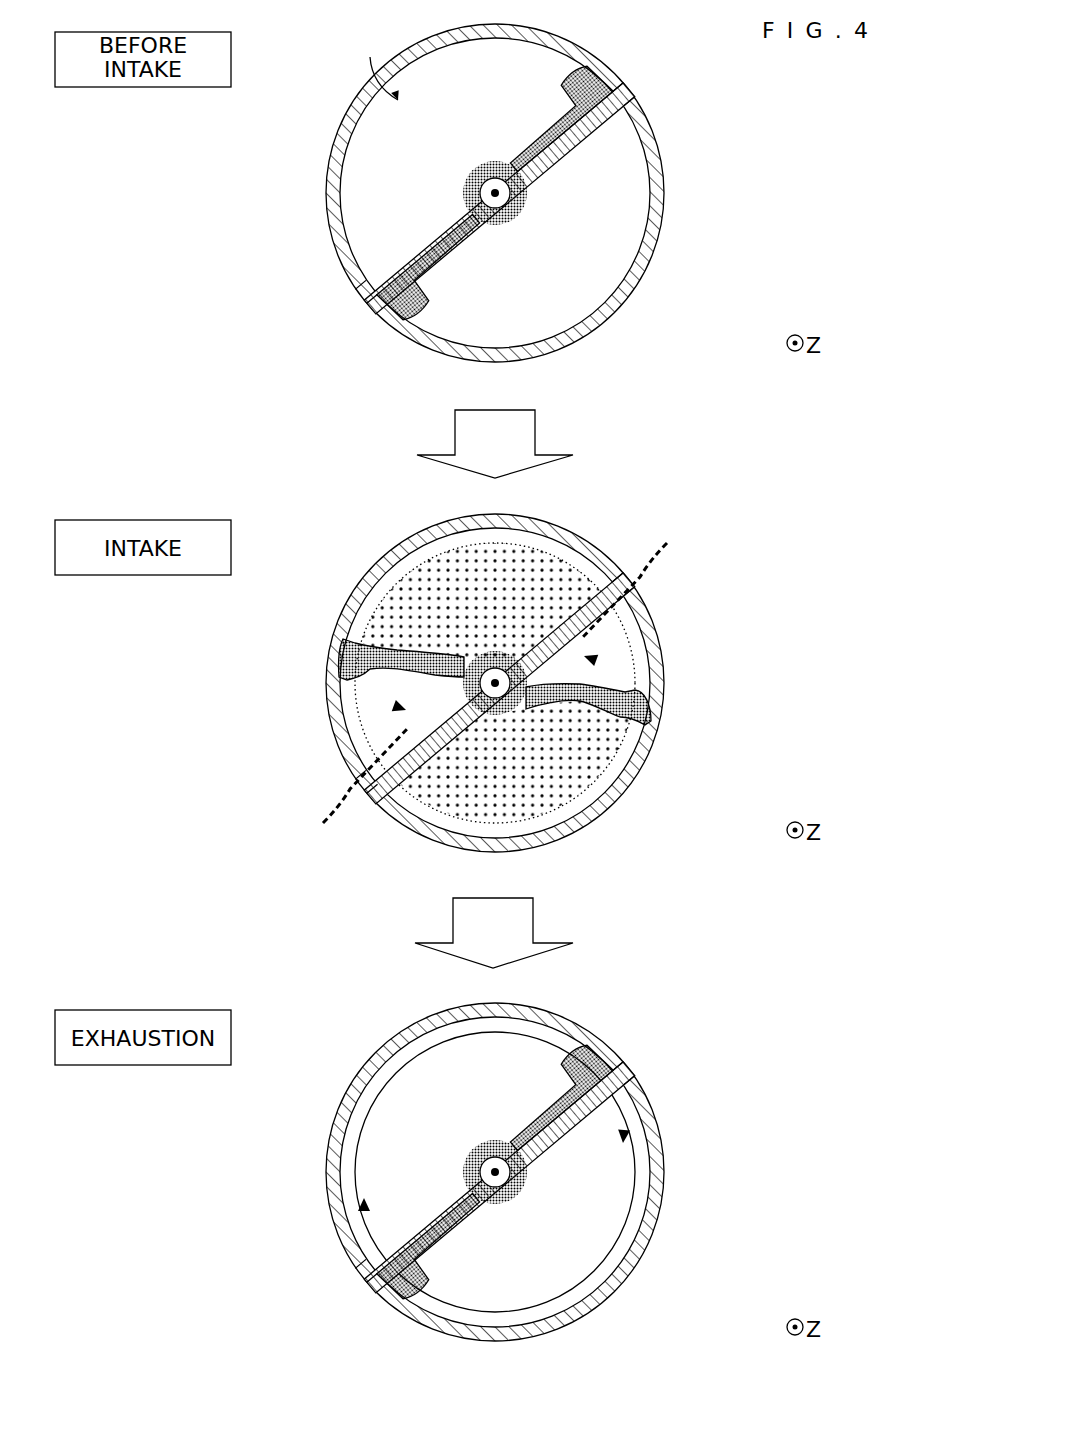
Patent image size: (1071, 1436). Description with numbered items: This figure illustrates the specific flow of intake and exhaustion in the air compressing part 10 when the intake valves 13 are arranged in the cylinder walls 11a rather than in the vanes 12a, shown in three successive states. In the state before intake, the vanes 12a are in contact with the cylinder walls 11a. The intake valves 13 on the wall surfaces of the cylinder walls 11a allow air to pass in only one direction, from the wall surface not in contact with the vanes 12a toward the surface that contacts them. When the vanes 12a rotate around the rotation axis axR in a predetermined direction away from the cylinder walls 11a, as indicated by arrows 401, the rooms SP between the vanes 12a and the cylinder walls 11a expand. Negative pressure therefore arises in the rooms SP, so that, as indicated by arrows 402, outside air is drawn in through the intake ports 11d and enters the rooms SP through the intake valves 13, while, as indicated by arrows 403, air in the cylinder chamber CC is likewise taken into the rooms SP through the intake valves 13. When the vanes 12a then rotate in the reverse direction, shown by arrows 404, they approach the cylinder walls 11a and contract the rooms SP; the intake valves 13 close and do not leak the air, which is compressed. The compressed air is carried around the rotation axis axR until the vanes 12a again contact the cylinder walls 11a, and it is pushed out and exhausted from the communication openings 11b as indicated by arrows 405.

The air compressing part 10 is at (485, 683).
The cylinder wall 11a is at (430, 253).
The communication opening 11b is at (620, 82).
The intake port 11d is at (648, 92).
The vane 12a is at (590, 60).
The intake valve 13 is at (588, 158).
The arrows 401 is at (413, 560).
The arrows 402 is at (670, 545).
The arrows 403 is at (596, 662).
The arrows 404 is at (415, 1058).
The arrows 405 is at (618, 1125).
The rotation axis axR is at (470, 178).
The cylinder chamber CC is at (377, 66).
The room SP is at (543, 530).